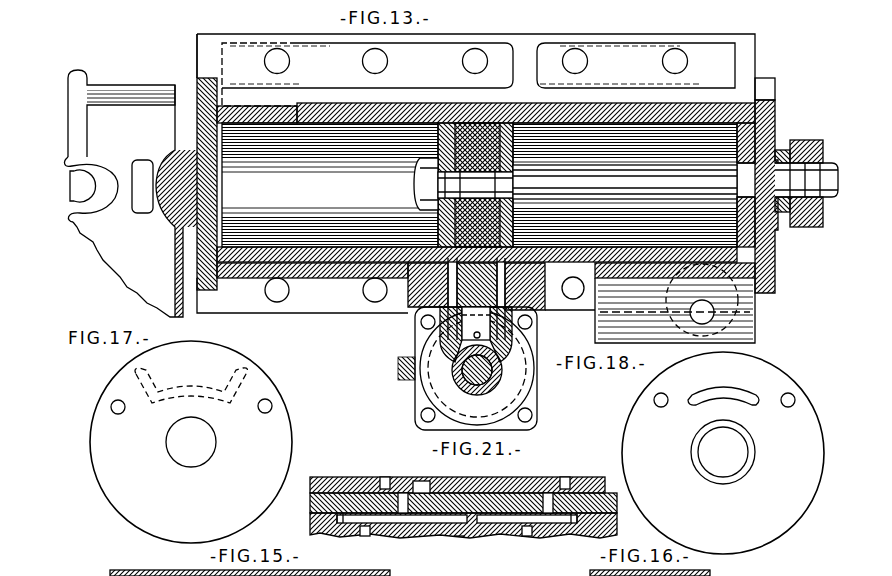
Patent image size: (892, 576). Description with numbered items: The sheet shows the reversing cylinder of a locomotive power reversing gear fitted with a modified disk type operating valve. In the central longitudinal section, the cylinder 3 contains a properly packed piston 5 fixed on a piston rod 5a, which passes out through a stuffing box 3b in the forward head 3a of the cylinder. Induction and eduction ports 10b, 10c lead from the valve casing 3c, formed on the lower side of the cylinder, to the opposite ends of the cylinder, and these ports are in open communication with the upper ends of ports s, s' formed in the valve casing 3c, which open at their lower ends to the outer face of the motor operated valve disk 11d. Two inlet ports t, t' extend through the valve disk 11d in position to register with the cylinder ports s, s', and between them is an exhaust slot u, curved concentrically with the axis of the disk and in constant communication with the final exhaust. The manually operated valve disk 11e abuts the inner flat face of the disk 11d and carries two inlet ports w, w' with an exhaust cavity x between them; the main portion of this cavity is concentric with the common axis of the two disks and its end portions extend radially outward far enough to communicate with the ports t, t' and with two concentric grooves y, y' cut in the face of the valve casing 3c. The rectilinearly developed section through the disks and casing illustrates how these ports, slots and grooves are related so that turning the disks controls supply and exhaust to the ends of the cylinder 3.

In FIG. 13, the reversing cylinder 3 is at (476, 188).
In FIG. 13, the forward head 3a is at (775, 250).
In FIG. 13, the stuffing box 3b is at (807, 140).
In FIG. 13, the valve casing 3c is at (404, 380).
In FIG. 21, the valve casing 3c is at (460, 536).
In FIG. 13, the piston 5 is at (520, 213).
In FIG. 13, the piston rod 5a is at (668, 182).
In FIG. 13, the induction and eduction port 10b is at (330, 185).
In FIG. 13, the induction and eduction port 10c is at (625, 185).
In FIG. 18, the motor operated valve disk section 11d is at (643, 457).
In FIG. 21, the motor operated valve disk section 11d is at (598, 450).
In FIG. 17, the manually operated valve disk section 11e is at (270, 440).
In FIG. 21, the manually operated valve disk section 11e is at (335, 452).
In FIG. 13, the cylinder port s is at (420, 299).
In FIG. 21, the cylinder port s is at (411, 531).
In FIG. 13, the cylinder port s' is at (532, 299).
In FIG. 21, the cylinder port s' is at (524, 528).
In FIG. 18, the inlet port t is at (803, 389).
In FIG. 21, the inlet port t is at (372, 546).
In FIG. 18, the inlet port t' is at (636, 396).
In FIG. 21, the inlet port t' is at (525, 551).
In FIG. 18, the exhaust slot u is at (723, 392).
In FIG. 17, the inlet port w is at (283, 395).
In FIG. 21, the inlet port w is at (380, 470).
In FIG. 17, the inlet port w' is at (97, 396).
In FIG. 21, the inlet port w' is at (559, 470).
In FIG. 17, the exhaust cavity x is at (191, 382).
In FIG. 21, the exhaust cavity x is at (420, 481).
In FIG. 21, the groove y is at (333, 538).
In FIG. 21, the groove y' is at (568, 539).